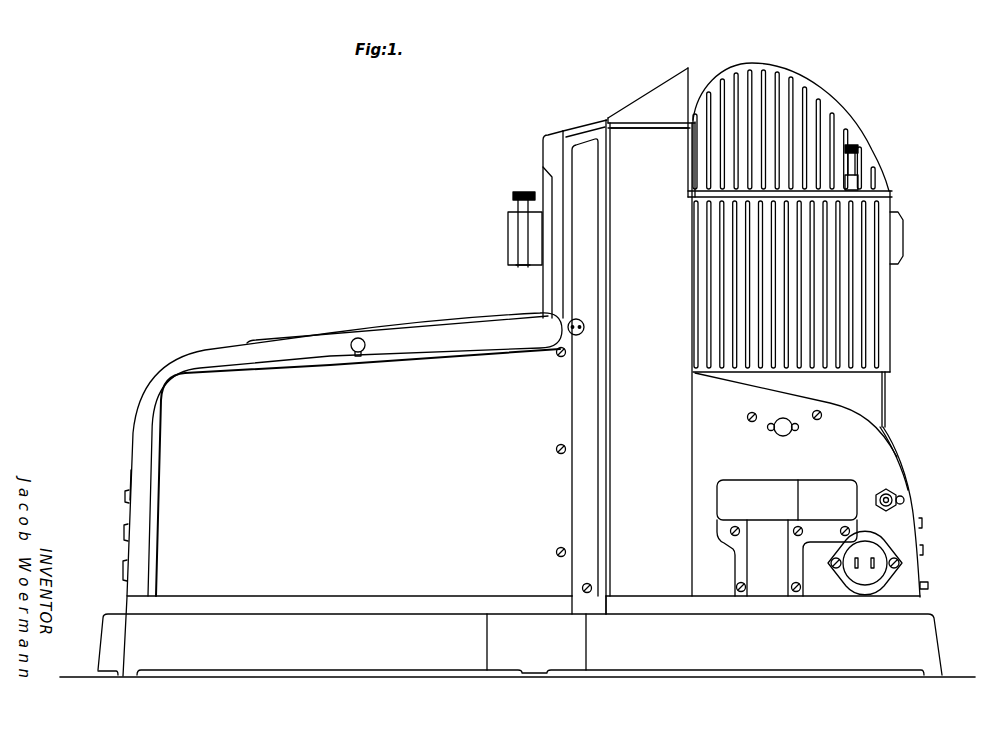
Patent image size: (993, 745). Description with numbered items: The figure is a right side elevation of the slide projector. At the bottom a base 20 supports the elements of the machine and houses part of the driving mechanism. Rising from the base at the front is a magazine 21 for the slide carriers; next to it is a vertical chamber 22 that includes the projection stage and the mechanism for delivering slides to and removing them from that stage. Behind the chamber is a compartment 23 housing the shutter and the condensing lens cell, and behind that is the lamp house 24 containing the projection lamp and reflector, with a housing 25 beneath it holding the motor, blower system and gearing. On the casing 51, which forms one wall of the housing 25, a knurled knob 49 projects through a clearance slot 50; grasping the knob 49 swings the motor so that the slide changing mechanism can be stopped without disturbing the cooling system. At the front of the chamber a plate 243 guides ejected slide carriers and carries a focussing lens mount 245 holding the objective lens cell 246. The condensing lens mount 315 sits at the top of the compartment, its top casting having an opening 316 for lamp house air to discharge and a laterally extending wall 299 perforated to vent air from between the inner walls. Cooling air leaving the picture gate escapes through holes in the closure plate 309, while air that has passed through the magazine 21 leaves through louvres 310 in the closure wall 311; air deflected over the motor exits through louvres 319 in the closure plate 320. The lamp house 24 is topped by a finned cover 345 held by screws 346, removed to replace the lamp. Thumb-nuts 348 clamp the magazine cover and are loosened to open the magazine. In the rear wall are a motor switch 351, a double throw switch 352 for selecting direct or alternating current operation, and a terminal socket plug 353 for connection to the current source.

The base 20 is at (930, 642).
The magazine 21 is at (205, 348).
The vertical chamber 22 is at (578, 124).
The compartment 23 is at (620, 108).
The lamp house 24 is at (895, 192).
The housing 25 is at (891, 424).
The knurled handle or knob 49 is at (782, 420).
The clearance slot 50 is at (797, 430).
The casing 51 is at (895, 455).
The plate 243 is at (555, 153).
The focussing lens mount 245 is at (537, 260).
The objective lens cell 246 is at (512, 232).
The laterally extending wall 299 is at (655, 128).
The closure plate 309 is at (566, 131).
The louvres 310 is at (128, 518).
The closure wall 311 is at (115, 468).
The condensing lens mount 315 is at (647, 88).
The opening 316 is at (688, 74).
The louvres 319 is at (921, 527).
The closure plate 320 is at (887, 398).
The finned cover 345 is at (803, 80).
The screws 346 is at (857, 145).
The thumb-nuts 348 is at (360, 338).
The switch 351 is at (930, 586).
The double throw switch 352 is at (900, 493).
The terminal socket plug 353 is at (885, 562).